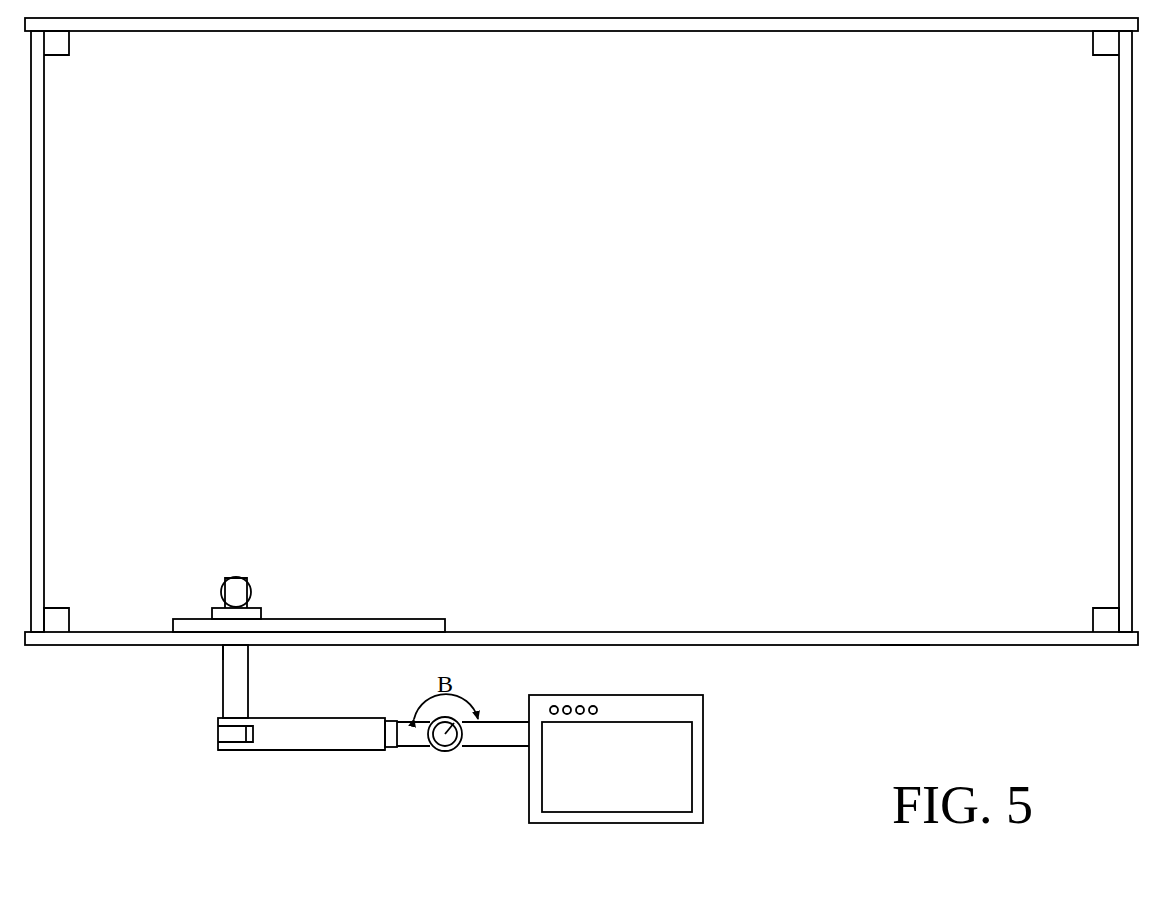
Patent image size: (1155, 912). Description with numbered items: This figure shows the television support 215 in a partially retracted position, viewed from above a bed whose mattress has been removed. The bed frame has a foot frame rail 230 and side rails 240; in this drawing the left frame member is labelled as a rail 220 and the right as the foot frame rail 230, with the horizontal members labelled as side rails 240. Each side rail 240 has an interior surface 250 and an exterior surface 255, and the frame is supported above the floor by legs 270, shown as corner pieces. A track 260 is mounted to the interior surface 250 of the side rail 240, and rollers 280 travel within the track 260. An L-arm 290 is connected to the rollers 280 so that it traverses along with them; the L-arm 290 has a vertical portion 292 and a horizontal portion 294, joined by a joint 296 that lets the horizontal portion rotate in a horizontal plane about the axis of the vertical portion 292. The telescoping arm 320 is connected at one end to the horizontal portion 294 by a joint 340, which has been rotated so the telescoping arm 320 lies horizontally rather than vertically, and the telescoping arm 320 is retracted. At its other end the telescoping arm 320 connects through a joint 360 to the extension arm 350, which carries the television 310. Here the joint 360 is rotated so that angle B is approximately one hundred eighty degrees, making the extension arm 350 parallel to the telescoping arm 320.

The television support 215 is at (246, 774).
The left vertical frame member 220 is at (38, 214).
The foot frame rail 230 is at (1125, 215).
The side rail 240 is at (505, 31).
The interior surface 250 is at (740, 632).
The exterior surface 255 is at (902, 646).
The track 260 is at (372, 619).
The leg 270 is at (62, 42).
The roller 280 is at (210, 620).
The L-arm 290 is at (206, 657).
The vertical portion 292 is at (236, 595).
The horizontal portion 294 is at (236, 658).
The joint 296 is at (255, 596).
The television 310 is at (703, 735).
The telescoping arm 320 is at (372, 718).
The joint 340 is at (235, 733).
The extension arm 350 is at (499, 746).
The joint 360 is at (436, 748).